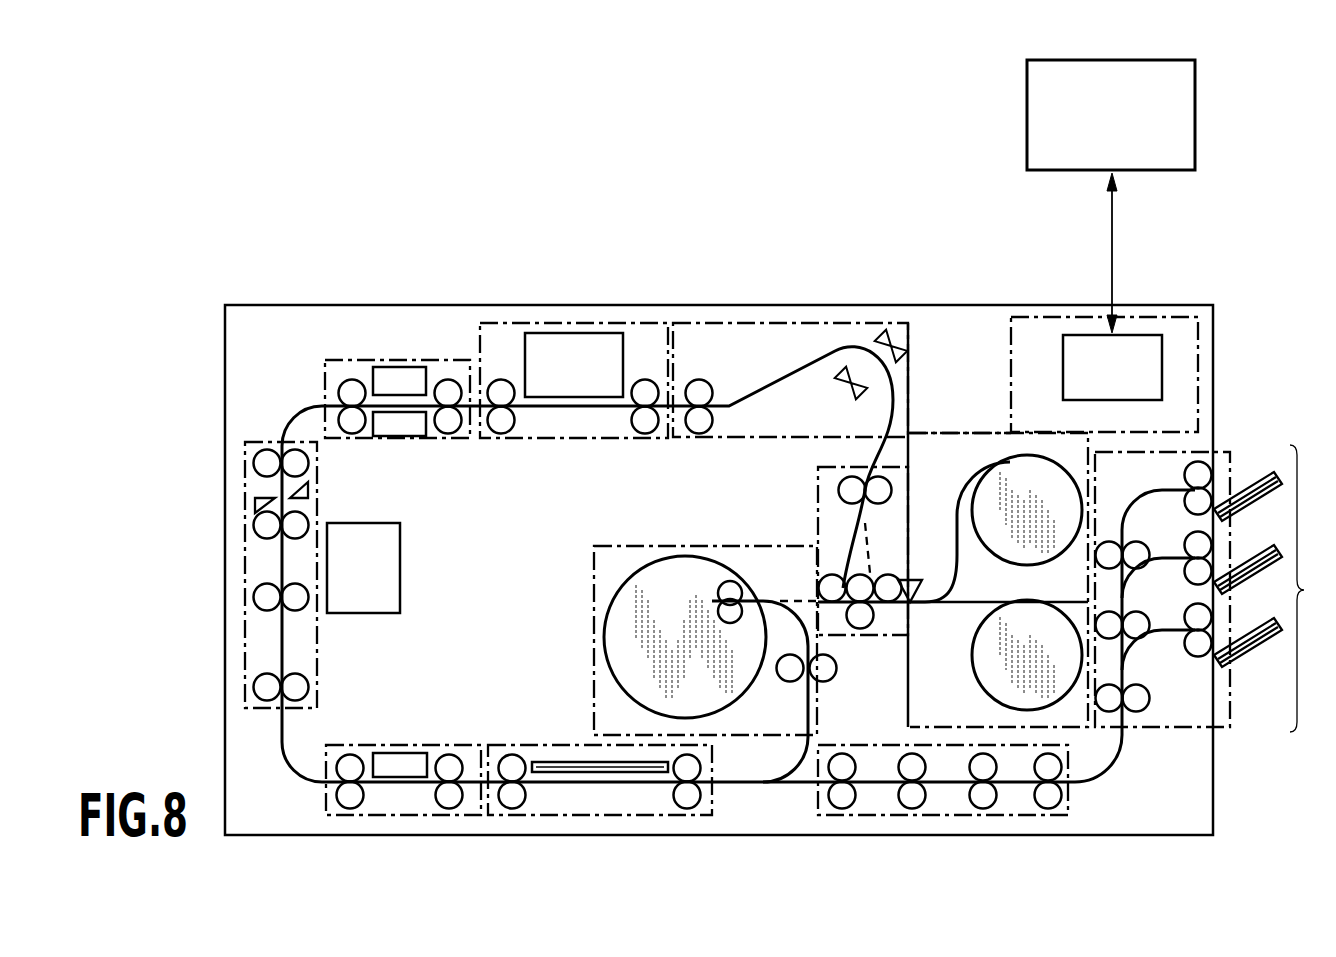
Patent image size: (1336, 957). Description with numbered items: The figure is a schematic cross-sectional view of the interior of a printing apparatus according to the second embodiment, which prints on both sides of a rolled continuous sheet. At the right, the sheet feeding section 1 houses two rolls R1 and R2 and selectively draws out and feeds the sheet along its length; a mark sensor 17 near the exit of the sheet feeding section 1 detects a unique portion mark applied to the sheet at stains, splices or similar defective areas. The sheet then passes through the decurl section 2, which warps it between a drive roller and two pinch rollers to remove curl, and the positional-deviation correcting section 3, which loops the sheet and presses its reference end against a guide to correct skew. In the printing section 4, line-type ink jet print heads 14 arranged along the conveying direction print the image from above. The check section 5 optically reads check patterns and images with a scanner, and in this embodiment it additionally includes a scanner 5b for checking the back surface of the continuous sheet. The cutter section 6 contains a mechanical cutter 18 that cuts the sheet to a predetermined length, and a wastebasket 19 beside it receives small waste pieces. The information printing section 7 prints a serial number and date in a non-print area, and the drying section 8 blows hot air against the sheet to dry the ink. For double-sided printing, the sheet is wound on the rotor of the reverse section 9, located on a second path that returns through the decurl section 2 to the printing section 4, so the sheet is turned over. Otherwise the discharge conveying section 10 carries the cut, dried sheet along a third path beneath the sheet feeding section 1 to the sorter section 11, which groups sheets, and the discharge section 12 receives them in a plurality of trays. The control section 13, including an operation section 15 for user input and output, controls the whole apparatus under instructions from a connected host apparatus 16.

The sheet feeding section 1 is at (953, 431).
The decurl section 2 is at (817, 508).
The positional-deviation correcting section 3 is at (725, 441).
The printing section 4 is at (574, 418).
The check section 5 is at (397, 436).
The scanner 5b is at (401, 425).
The cutter section 6 is at (318, 488).
The information printing section 7 is at (401, 743).
The drying section 8 is at (513, 743).
The reverse section 9 is at (594, 607).
The discharge conveying section 10 is at (874, 743).
The sorter section 11 is at (1232, 730).
The discharge section 12 is at (1275, 588).
The control section 13 is at (1074, 373).
The print head 14 is at (534, 368).
The operation section 15 is at (1070, 370).
The host apparatus 16 is at (1187, 120).
The mark sensor 17 is at (909, 579).
The mechanical cutter 18 is at (254, 500).
The wastebasket 19 is at (401, 594).
The roll R1 is at (1038, 552).
The roll R2 is at (978, 656).